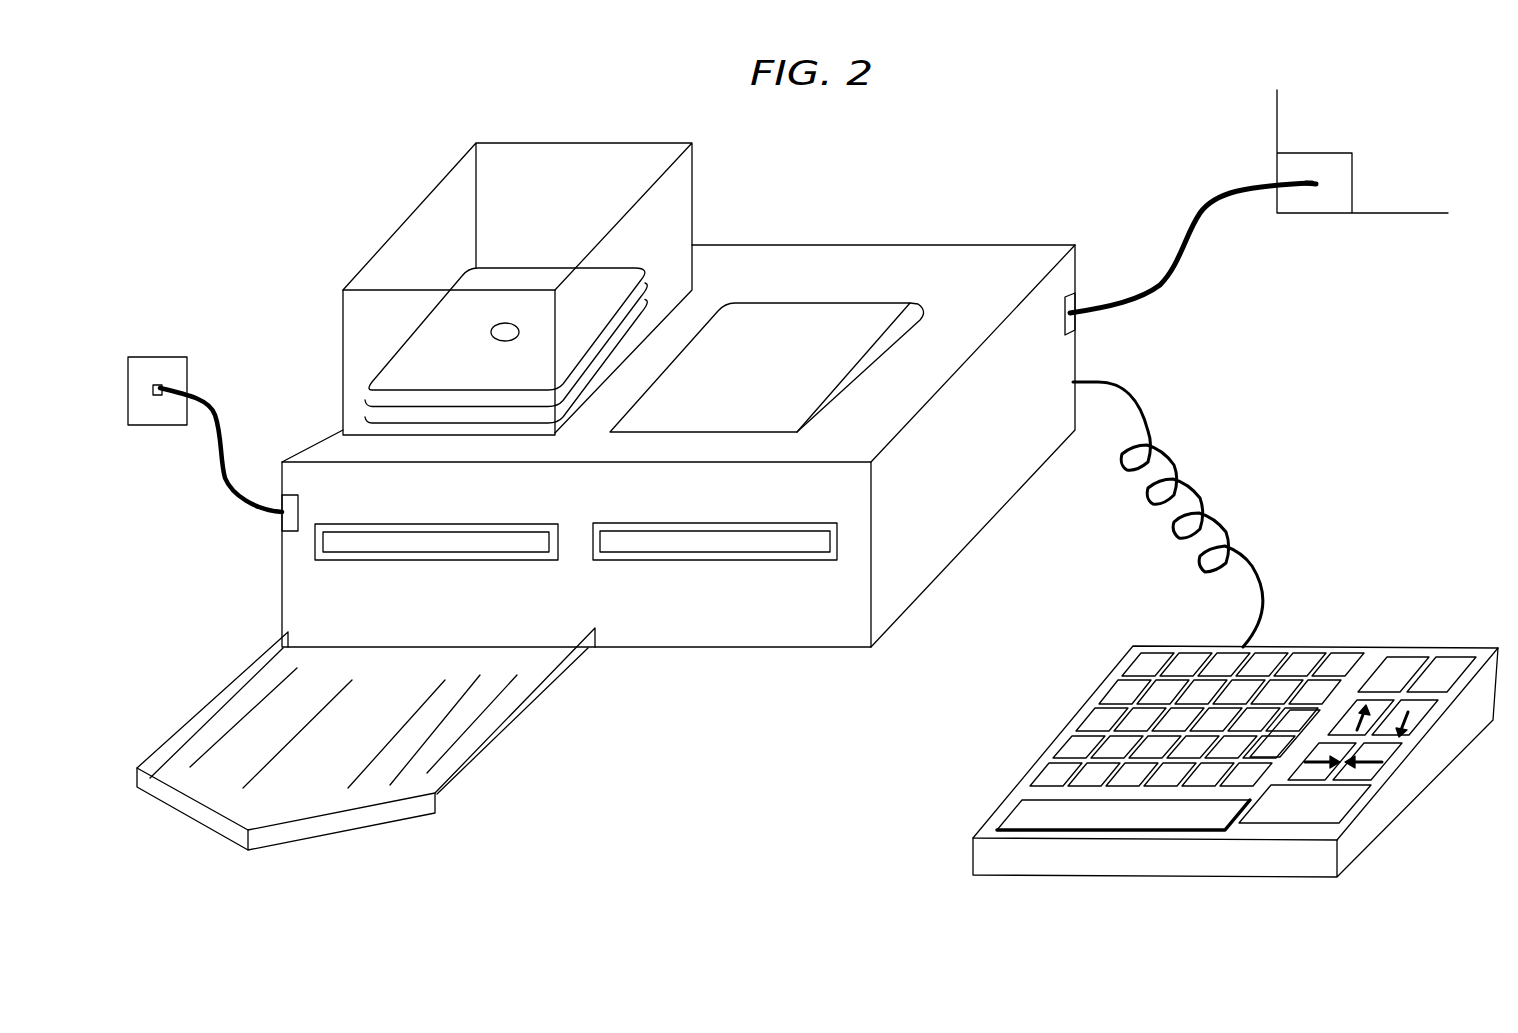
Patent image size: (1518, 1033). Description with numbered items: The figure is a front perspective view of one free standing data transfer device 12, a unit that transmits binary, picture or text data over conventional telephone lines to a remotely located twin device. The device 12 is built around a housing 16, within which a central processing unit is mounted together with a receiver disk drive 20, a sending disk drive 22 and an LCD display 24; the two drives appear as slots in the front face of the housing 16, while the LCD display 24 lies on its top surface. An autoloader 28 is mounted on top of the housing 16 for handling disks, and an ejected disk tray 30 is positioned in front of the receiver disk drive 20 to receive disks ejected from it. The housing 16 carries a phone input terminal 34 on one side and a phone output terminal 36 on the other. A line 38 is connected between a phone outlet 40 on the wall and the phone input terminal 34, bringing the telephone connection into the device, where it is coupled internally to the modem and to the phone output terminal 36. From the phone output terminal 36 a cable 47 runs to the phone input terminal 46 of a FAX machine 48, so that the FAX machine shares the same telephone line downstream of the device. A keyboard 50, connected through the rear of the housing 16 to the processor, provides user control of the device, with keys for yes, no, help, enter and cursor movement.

The free standing data transfer device 12 is at (879, 203).
The housing 16 is at (937, 270).
The receiver disk drive 20 is at (388, 545).
The sending disk drive 22 is at (688, 543).
The LCD display 24 is at (776, 377).
The autoloader 28 is at (692, 203).
The ejected disk tray 30 is at (233, 788).
The phone input terminal 34 is at (280, 520).
The phone output terminal 36 is at (1073, 315).
The line 38 is at (216, 410).
The phone outlet 40 is at (160, 385).
The phone input terminal of FAX machine 46 is at (1312, 186).
The communication cable 47 is at (1193, 227).
The FAX machine 48 is at (1440, 167).
The keyboard 50 is at (1418, 788).